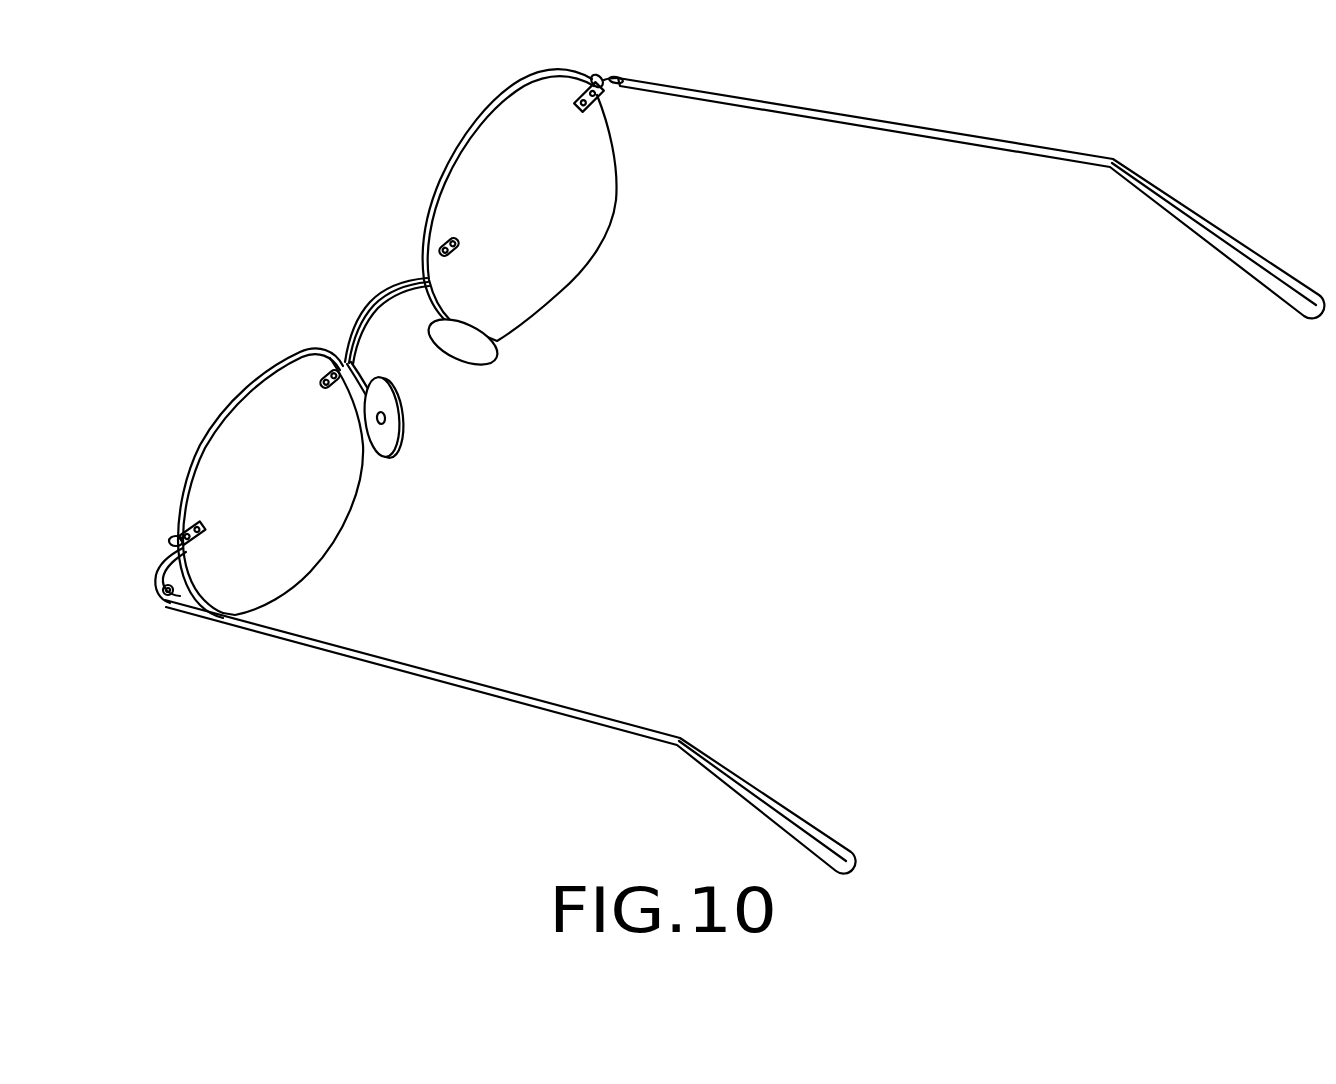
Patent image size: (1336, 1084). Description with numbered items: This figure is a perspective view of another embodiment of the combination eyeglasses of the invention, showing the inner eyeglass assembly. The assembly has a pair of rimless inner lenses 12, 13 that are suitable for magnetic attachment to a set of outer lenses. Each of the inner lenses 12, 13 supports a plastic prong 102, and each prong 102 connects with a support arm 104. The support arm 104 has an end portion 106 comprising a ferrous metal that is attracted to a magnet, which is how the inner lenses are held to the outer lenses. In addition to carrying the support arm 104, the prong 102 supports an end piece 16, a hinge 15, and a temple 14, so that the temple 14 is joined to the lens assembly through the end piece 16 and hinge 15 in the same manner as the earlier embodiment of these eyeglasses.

The inner lens 12 is at (283, 405).
The inner lens 13 is at (490, 153).
The temple 14 is at (527, 703).
The hinge 15 is at (160, 597).
The end piece 16 is at (160, 563).
The plastic prong 102 is at (178, 533).
The support arm 104 is at (172, 536).
The end portion 106 is at (183, 550).